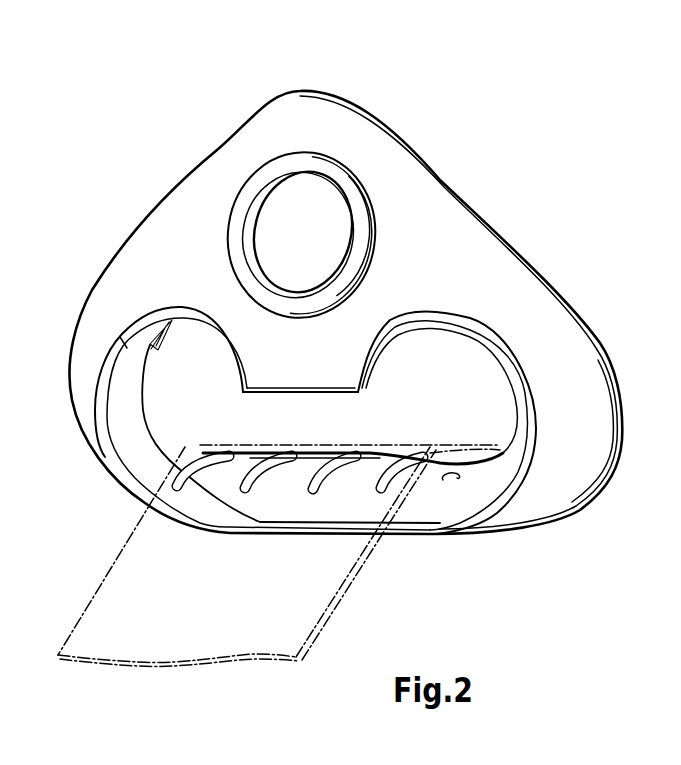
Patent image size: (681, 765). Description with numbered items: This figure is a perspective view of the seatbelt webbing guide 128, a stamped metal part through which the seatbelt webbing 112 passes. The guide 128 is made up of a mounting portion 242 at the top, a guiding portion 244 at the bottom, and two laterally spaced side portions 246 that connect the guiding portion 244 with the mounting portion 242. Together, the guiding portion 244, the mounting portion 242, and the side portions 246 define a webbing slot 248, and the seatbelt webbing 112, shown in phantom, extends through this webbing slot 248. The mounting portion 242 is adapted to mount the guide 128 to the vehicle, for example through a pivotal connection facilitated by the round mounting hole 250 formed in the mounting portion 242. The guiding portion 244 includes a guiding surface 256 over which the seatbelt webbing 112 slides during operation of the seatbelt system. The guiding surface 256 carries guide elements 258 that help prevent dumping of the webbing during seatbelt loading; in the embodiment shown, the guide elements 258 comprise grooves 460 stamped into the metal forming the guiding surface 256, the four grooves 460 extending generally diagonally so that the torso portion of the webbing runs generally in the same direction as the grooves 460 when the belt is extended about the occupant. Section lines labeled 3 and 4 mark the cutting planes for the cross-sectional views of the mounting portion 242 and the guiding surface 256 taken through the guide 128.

The guide 128 is at (559, 122).
The mounting portion 242 is at (398, 167).
The mounting hole 250 is at (273, 241).
The side portions 246 is at (83, 340).
The webbing slot 248 is at (176, 395).
The grooves 460 is at (275, 451).
The guiding portion 244 is at (337, 513).
The guide elements 258 is at (308, 437).
The guiding surface 256 is at (457, 478).
The seatbelt webbing 112 is at (117, 593).
The section line 3- 3 is at (299, 110).
The section line 4- 4 is at (115, 417).